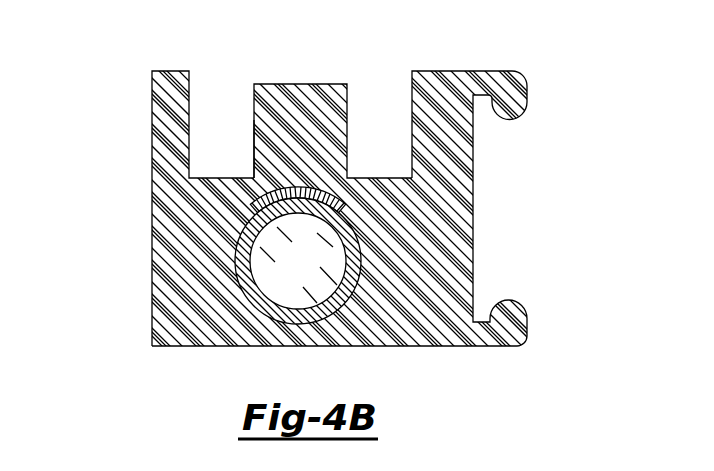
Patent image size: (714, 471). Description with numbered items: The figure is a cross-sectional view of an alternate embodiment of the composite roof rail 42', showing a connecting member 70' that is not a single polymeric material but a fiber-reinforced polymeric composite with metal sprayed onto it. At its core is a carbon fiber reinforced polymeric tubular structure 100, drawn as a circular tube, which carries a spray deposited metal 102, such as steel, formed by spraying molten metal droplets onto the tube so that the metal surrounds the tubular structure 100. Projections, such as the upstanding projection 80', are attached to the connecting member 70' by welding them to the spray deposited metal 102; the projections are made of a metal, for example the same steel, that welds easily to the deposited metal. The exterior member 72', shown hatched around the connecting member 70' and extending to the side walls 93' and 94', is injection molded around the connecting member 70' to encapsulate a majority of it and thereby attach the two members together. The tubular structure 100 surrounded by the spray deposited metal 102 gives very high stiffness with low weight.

The rail member 42' is at (292, 191).
The first upstanding wall 93' is at (173, 208).
The projection 80' is at (333, 98).
The connecting member 70' is at (236, 135).
The exterior member 72' is at (298, 328).
The hooked side wall 94' is at (490, 234).
The spray deposited metal 102 is at (368, 198).
The carbon fiber reinforced polymeric tubular structure 100 is at (312, 272).